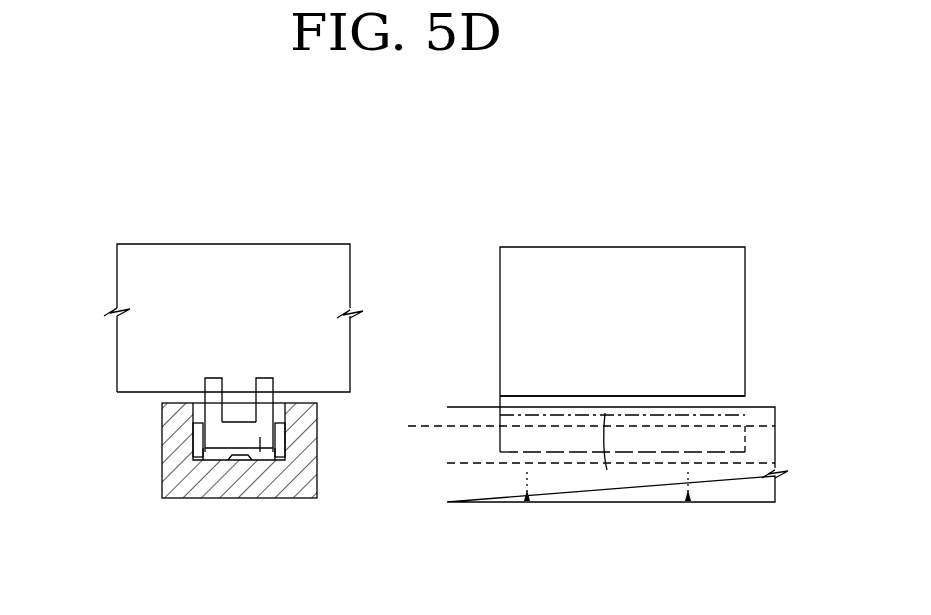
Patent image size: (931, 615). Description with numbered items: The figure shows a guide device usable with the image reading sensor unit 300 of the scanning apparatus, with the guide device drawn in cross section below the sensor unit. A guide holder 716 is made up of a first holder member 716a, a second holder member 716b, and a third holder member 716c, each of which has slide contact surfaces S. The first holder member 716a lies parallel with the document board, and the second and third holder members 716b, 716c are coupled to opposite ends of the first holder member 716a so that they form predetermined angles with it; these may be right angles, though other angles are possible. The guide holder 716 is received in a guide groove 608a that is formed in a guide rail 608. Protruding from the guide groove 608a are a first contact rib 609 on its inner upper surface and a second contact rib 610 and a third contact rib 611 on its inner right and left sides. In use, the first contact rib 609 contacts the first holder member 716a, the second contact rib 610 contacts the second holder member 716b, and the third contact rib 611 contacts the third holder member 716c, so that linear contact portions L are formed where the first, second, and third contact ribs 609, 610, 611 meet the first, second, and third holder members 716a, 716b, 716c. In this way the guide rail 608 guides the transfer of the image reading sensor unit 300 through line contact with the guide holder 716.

The image reading sensor unit 300 is at (350, 244).
The guide rail 608 is at (238, 506).
The guide groove 608a is at (224, 458).
The first contact rib 609 is at (235, 445).
The second contact rib 610 is at (510, 423).
The third contact rib 611 is at (197, 430).
The guide holder 716 is at (288, 443).
The first holder member 716a is at (268, 464).
The second holder member 716b is at (270, 398).
The third holder member 716c is at (212, 393).
The slide contact surface S is at (713, 401).
The linear contact portion L is at (607, 480).